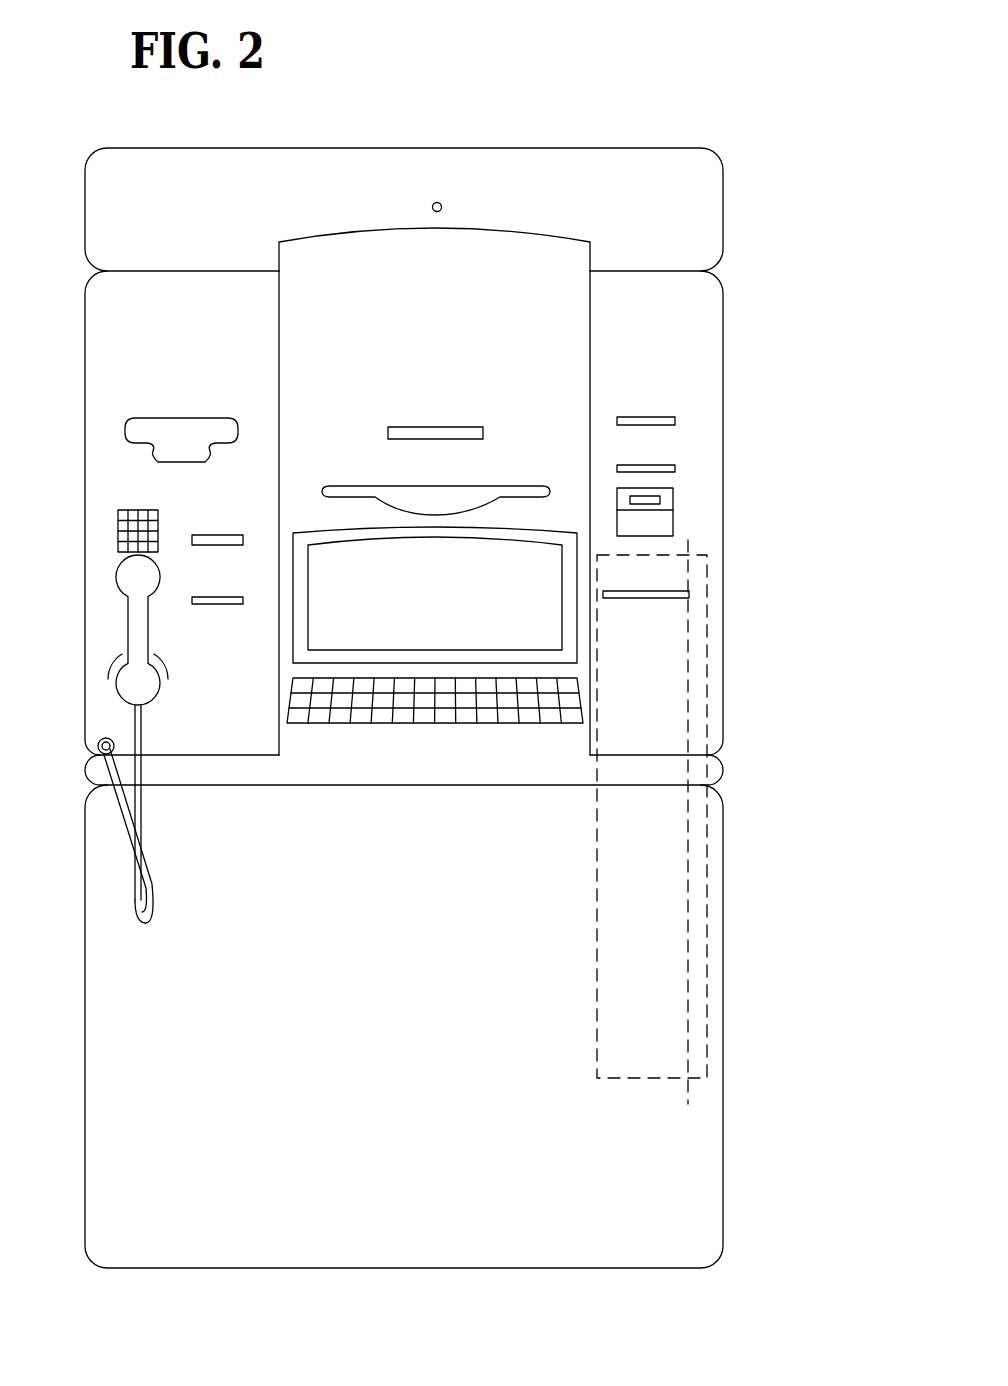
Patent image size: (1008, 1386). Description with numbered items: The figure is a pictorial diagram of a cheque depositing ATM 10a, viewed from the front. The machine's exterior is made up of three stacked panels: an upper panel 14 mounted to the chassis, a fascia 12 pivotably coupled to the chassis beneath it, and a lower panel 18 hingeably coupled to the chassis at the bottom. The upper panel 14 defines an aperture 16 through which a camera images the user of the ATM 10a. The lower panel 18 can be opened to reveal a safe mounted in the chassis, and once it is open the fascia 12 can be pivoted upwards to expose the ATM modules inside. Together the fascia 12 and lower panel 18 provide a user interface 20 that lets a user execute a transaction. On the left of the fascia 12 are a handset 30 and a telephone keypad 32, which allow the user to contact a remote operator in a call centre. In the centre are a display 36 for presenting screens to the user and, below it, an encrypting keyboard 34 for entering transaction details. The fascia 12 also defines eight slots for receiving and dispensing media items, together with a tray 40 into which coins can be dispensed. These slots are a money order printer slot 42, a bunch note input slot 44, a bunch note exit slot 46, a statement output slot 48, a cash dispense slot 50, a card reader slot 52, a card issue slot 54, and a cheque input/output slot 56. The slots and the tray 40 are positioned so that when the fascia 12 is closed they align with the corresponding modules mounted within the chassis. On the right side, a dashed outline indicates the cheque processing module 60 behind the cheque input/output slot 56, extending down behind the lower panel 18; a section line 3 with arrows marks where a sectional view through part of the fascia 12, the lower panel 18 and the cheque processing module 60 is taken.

The cheque depositing ATM 10a is at (672, 70).
The fascia 12 is at (108, 330).
The upper panel 14 is at (697, 206).
The aperture 16 is at (442, 205).
The lower panel 18 is at (110, 1176).
The user interface 20 is at (207, 937).
The handset 30 is at (128, 629).
The telephone keypad 32 is at (130, 526).
The encrypting keyboard 34 is at (305, 693).
The display 36 is at (455, 603).
The tray 40 is at (673, 498).
The money order printer slot 42 is at (180, 430).
The bunch note input slot 44 is at (213, 535).
The bunch note exit slot 46 is at (213, 604).
The statement output slot 48 is at (448, 427).
The cash dispense slot 50 is at (430, 500).
The card reader slot 52 is at (663, 417).
The card issue slot 54 is at (675, 468).
The cheque input/output slot 56 is at (652, 598).
The cheque processing module 60 is at (712, 908).
The section line 3- 3 is at (690, 543).